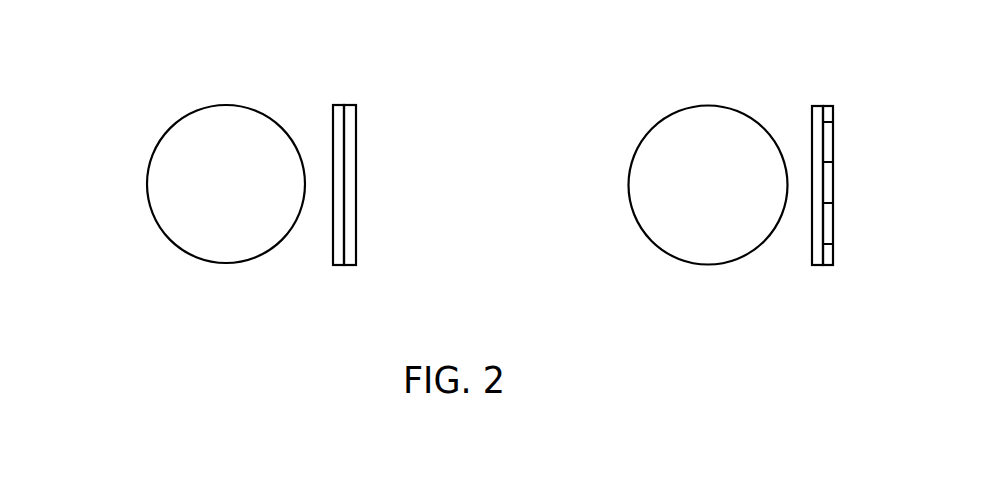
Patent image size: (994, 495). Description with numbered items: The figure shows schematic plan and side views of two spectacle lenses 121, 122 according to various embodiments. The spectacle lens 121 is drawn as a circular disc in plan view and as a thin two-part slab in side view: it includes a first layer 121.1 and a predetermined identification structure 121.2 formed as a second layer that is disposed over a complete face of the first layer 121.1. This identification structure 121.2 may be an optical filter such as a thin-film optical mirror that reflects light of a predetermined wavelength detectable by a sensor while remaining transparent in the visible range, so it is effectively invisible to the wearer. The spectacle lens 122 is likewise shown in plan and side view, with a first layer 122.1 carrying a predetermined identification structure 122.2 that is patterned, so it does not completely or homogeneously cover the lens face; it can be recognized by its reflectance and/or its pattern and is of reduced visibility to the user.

The spectacle lens 121 is at (168, 125).
The first layer 121.1 is at (338, 105).
The predetermined identification structure 121.2 is at (350, 105).
The spectacle lens 122 is at (650, 127).
The first layer of second plate element 122.1 is at (819, 106).
The predetermined identification structure 122.2 is at (833, 227).